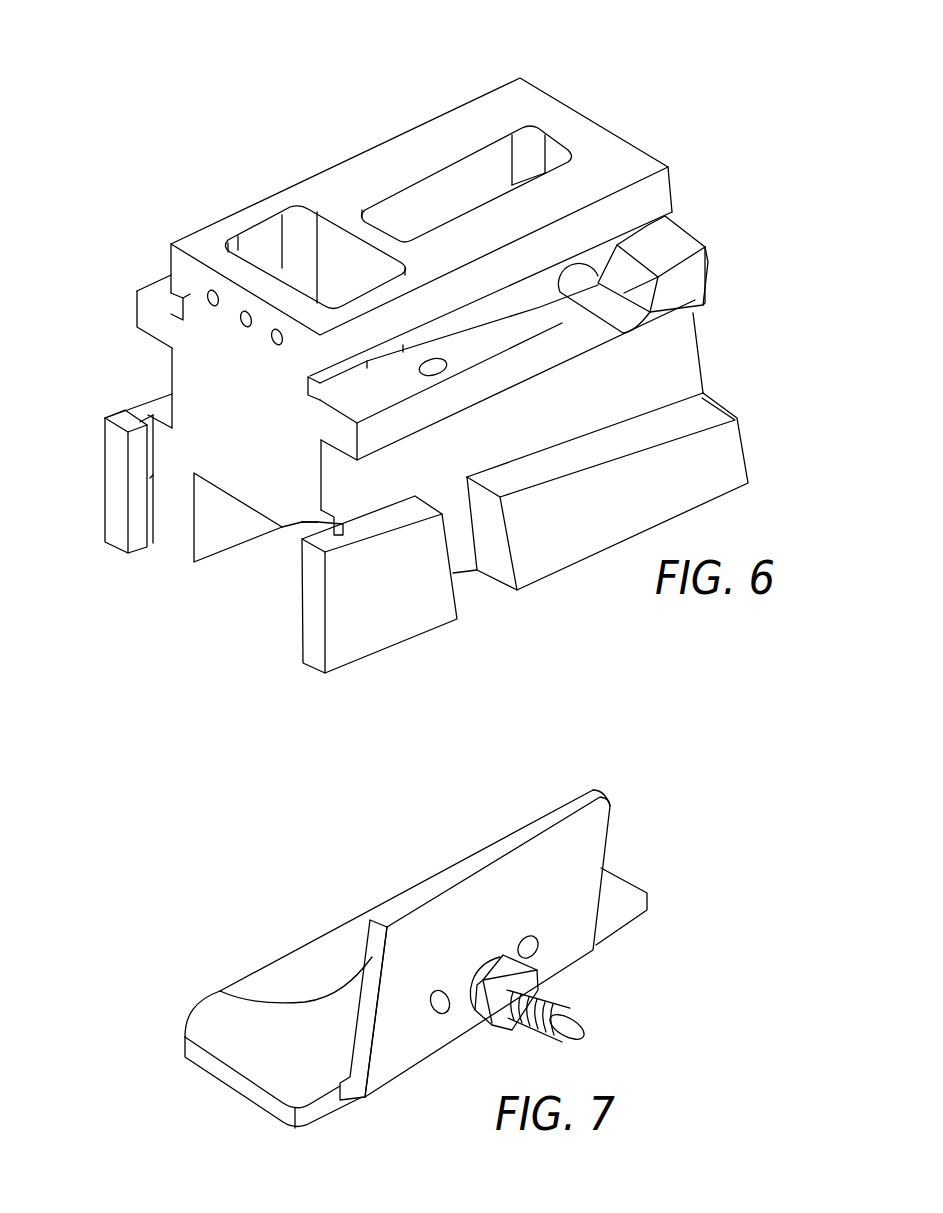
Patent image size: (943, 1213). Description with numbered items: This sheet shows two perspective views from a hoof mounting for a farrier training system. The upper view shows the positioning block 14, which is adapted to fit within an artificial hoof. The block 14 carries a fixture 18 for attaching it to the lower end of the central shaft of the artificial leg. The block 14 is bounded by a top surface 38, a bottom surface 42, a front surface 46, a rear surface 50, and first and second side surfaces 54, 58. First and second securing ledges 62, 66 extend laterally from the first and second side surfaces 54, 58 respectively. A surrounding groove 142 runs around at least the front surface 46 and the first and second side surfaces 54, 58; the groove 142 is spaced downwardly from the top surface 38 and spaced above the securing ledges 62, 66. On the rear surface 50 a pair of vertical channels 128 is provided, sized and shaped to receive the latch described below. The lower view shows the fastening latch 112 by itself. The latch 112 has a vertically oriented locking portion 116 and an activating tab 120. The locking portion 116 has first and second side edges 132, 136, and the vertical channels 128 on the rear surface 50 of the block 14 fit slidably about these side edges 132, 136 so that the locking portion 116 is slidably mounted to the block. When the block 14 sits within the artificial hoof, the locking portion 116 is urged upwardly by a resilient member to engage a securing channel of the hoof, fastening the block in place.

In FIG. 6, the positioning block 14 is at (645, 106).
In FIG. 6, the top surface 38 is at (363, 160).
In FIG. 6, the rear surface 50 is at (205, 378).
In FIG. 6, the first side surface 54 is at (162, 352).
In FIG. 6, the surrounding groove 142 is at (176, 300).
In FIG. 6, the front surface 46 is at (700, 350).
In FIG. 6, the second side surface 58 is at (662, 387).
In FIG. 6, the fixture 18 is at (603, 271).
In FIG. 6, the bottom surface 42 is at (575, 560).
In FIG. 6, the second securing ledge 66 is at (392, 620).
In FIG. 6, the first securing ledge 62 is at (98, 476).
In FIG. 6, the vertical channels 128 is at (153, 475).
In FIG. 7, the fastening latch 112 is at (704, 832).
In FIG. 7, the activating tab 120 is at (270, 985).
In FIG. 7, the locking portion 116 is at (590, 836).
In FIG. 7, the first side edge 132 is at (598, 792).
In FIG. 7, the second side edge 136 is at (220, 991).